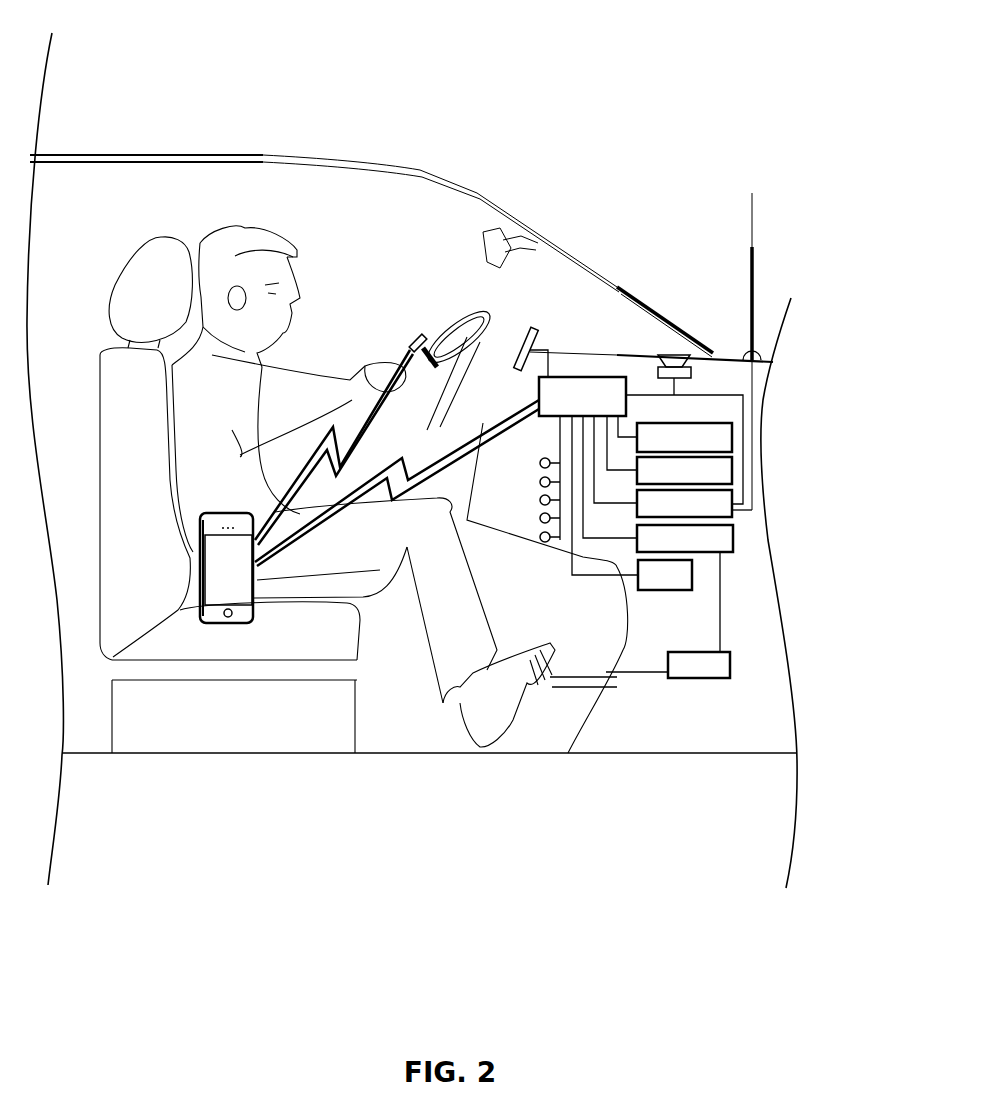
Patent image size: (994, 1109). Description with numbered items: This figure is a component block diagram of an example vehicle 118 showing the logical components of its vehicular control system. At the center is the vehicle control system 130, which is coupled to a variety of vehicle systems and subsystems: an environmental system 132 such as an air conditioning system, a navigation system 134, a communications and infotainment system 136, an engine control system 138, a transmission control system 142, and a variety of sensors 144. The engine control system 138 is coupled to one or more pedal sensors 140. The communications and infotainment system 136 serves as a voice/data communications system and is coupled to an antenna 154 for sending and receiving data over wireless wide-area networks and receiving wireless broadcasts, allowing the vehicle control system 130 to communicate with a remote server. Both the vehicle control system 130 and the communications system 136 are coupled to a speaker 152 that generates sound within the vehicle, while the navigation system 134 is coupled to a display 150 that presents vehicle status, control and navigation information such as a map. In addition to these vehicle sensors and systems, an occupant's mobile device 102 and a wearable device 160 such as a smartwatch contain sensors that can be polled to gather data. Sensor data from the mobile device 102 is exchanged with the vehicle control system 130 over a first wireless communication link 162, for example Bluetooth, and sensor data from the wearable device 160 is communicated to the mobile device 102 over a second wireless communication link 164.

The mobile device 102 is at (248, 513).
The vehicle 118 is at (684, 72).
The vehicle control system 130 is at (641, 458).
The environmental system 132 is at (675, 434).
The navigation system 134 is at (669, 450).
The communications and infotainment system 136 is at (663, 466).
The engine control system 138 is at (658, 534).
The pedal sensor 140 is at (668, 668).
The transmission control system 142 is at (632, 503).
The sensors 144 is at (537, 457).
The display 150 is at (491, 328).
The speaker 152 is at (642, 354).
The antenna 154 is at (776, 351).
The wearable device 160 is at (387, 340).
The first wireless communication link 162 is at (397, 483).
The second wireless communication link 164 is at (334, 447).